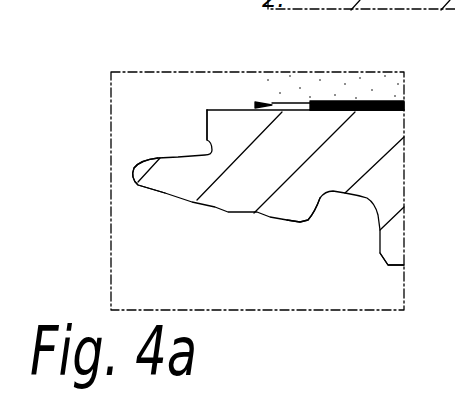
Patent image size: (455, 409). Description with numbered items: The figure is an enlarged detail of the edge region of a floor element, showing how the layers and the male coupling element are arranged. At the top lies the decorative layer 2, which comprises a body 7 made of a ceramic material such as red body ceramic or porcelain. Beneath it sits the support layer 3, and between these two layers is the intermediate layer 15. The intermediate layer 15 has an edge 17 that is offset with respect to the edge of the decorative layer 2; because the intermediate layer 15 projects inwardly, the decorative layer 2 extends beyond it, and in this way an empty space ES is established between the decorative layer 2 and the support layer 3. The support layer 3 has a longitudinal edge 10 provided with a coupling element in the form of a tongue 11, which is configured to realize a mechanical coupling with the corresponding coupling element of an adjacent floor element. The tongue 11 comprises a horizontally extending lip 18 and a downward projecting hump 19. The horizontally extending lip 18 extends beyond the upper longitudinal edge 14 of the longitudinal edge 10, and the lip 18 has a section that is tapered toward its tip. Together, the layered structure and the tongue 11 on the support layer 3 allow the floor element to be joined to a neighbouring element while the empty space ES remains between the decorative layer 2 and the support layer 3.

The longitudinal edge 10 is at (116, 244).
The tongue 11 is at (238, 188).
The upper longitudinal edge 14 is at (207, 110).
The intermediate layer 15 is at (404, 108).
The edge of the intermediate layer 17 is at (310, 104).
The horizontally extending lip 18 is at (180, 187).
The downward projecting hump 19 is at (298, 215).
The decorative layer 2 is at (348, 82).
The support layer 3 is at (392, 247).
The body 7 is at (378, 83).
The empty space ES is at (256, 105).